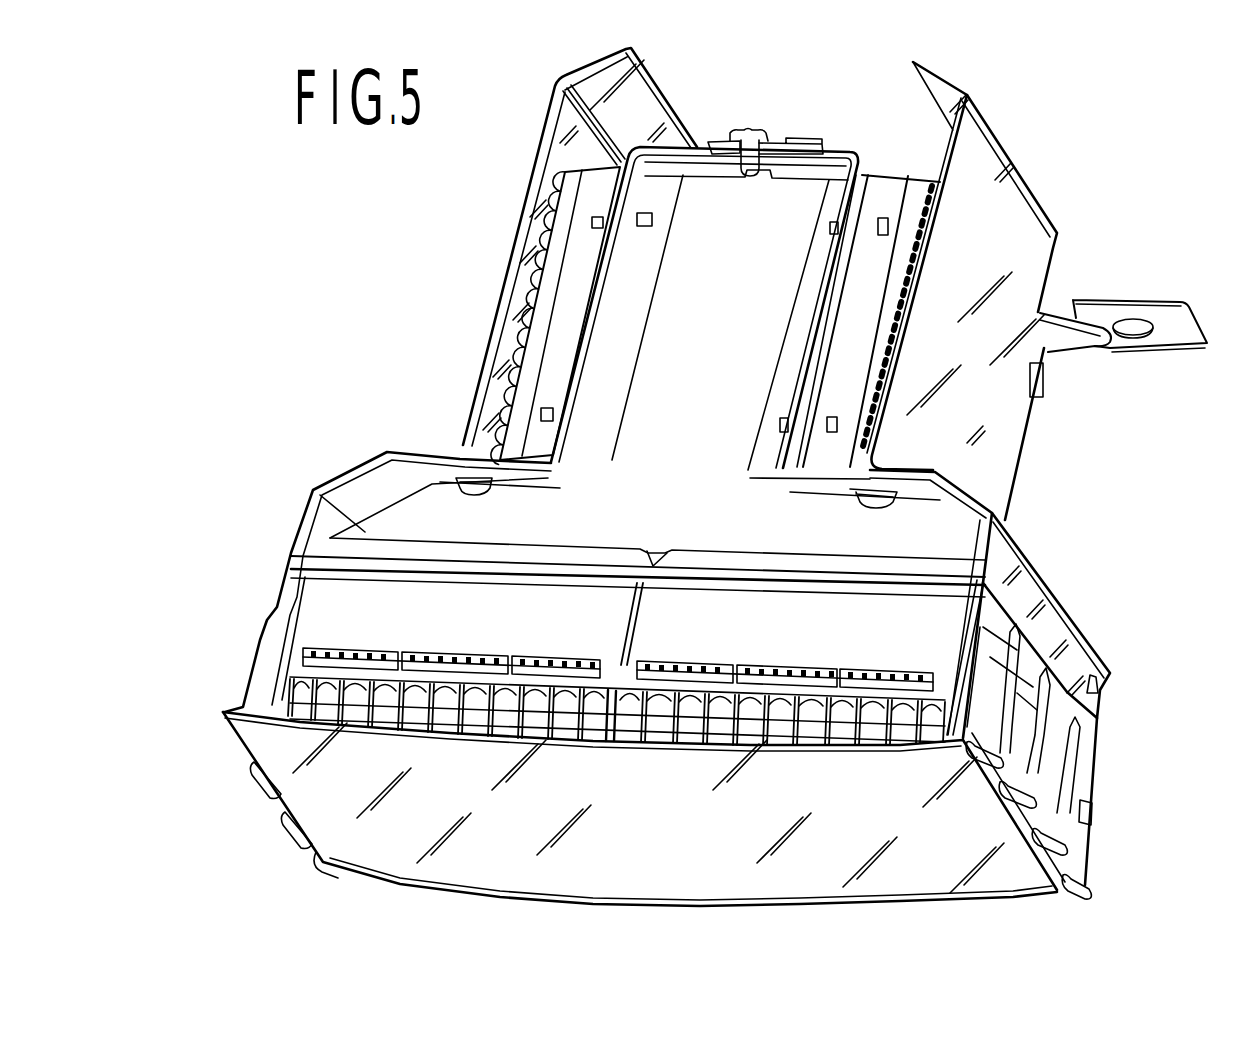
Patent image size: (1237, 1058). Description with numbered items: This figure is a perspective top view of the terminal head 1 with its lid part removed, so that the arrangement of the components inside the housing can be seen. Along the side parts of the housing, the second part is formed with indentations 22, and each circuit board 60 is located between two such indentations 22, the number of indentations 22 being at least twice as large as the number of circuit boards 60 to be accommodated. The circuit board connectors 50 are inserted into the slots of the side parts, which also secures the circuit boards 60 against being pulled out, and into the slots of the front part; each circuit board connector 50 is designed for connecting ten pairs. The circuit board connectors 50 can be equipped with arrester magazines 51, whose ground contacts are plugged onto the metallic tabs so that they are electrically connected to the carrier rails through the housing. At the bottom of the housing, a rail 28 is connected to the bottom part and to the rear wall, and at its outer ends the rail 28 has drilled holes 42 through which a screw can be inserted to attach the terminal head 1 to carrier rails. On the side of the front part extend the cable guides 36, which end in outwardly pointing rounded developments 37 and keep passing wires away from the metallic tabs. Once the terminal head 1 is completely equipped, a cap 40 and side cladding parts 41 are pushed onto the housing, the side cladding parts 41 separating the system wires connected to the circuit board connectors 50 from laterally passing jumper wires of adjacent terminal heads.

The terminal head 1 is at (833, 78).
The indentations 22 is at (487, 490).
The rail 28 is at (1073, 343).
The cable guides 36 is at (1077, 843).
The rounded developments 37 is at (1088, 893).
The cap 40 is at (290, 753).
The side cladding parts 41 is at (540, 163).
The drilled holes 42 is at (1131, 322).
The circuit board connectors 50 is at (592, 263).
The arrester magazines 51 is at (330, 694).
The circuit boards 60 is at (690, 339).